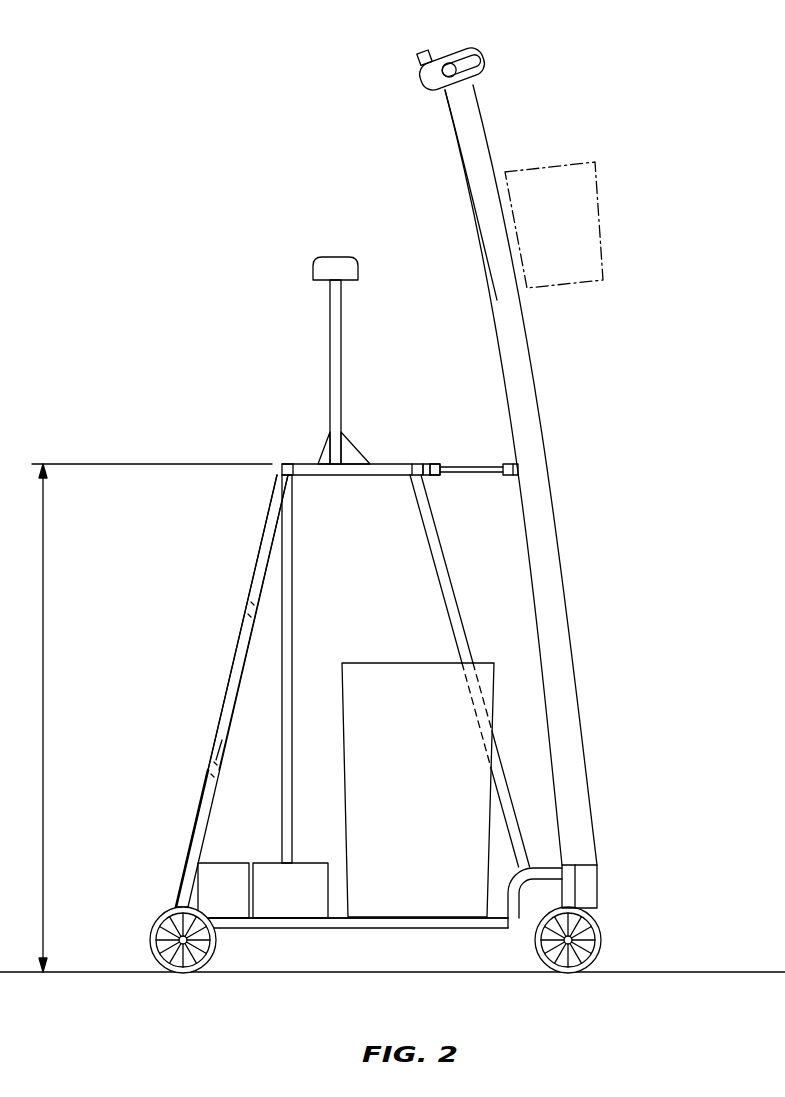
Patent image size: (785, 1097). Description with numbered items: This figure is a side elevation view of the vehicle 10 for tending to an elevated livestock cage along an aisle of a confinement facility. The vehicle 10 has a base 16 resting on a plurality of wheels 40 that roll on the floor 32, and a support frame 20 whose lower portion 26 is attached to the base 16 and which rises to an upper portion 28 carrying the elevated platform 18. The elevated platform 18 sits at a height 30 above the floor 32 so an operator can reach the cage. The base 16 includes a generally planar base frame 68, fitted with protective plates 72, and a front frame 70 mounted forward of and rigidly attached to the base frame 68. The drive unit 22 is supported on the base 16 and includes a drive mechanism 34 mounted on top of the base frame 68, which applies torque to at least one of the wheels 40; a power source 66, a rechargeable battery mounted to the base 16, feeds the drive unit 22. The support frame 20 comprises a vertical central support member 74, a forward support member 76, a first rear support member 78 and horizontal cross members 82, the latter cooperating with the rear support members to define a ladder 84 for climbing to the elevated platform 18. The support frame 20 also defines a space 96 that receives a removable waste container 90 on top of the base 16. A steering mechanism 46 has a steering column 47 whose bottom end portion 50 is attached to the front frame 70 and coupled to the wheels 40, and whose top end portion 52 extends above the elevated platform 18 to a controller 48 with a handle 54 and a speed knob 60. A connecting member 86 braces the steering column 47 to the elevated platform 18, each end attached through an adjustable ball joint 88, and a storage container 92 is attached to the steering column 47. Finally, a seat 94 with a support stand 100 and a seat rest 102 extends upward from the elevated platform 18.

The vehicle 10 is at (691, 90).
The base 16 is at (362, 930).
The elevated platform 18 is at (300, 463).
The support frame 20 is at (165, 697).
The drive unit 22 is at (263, 860).
The lower portion 26 is at (178, 902).
The upper portion 28 is at (278, 483).
The height 30 is at (142, 718).
The floor 32 is at (85, 971).
The drive mechanism 34 is at (232, 898).
The wheels 40 is at (158, 933).
The steering mechanism 46 is at (560, 357).
The steering column 47 is at (538, 407).
The controller 48 is at (455, 50).
The bottom end portion 50 is at (598, 850).
The top end portion 52 is at (476, 96).
The handle 54 is at (458, 52).
The speed knob 60 is at (428, 47).
The power source 66 is at (302, 898).
The base frame 68 is at (280, 929).
The front frame 70 is at (542, 866).
The protective plates 72 is at (194, 838).
The central support member 74 is at (283, 748).
The forward support member 76 is at (438, 553).
The first rear support member 78 is at (235, 690).
The horizontal cross members 82 is at (250, 610).
The ladder 84 is at (212, 750).
The connecting member 86 is at (474, 466).
The ball joint 88 is at (436, 463).
The waste container 90 is at (426, 798).
The storage container 92 is at (600, 197).
The seat 94 is at (304, 340).
The space 96 is at (397, 776).
The support stand 100 is at (329, 357).
The seat rest 102 is at (312, 272).